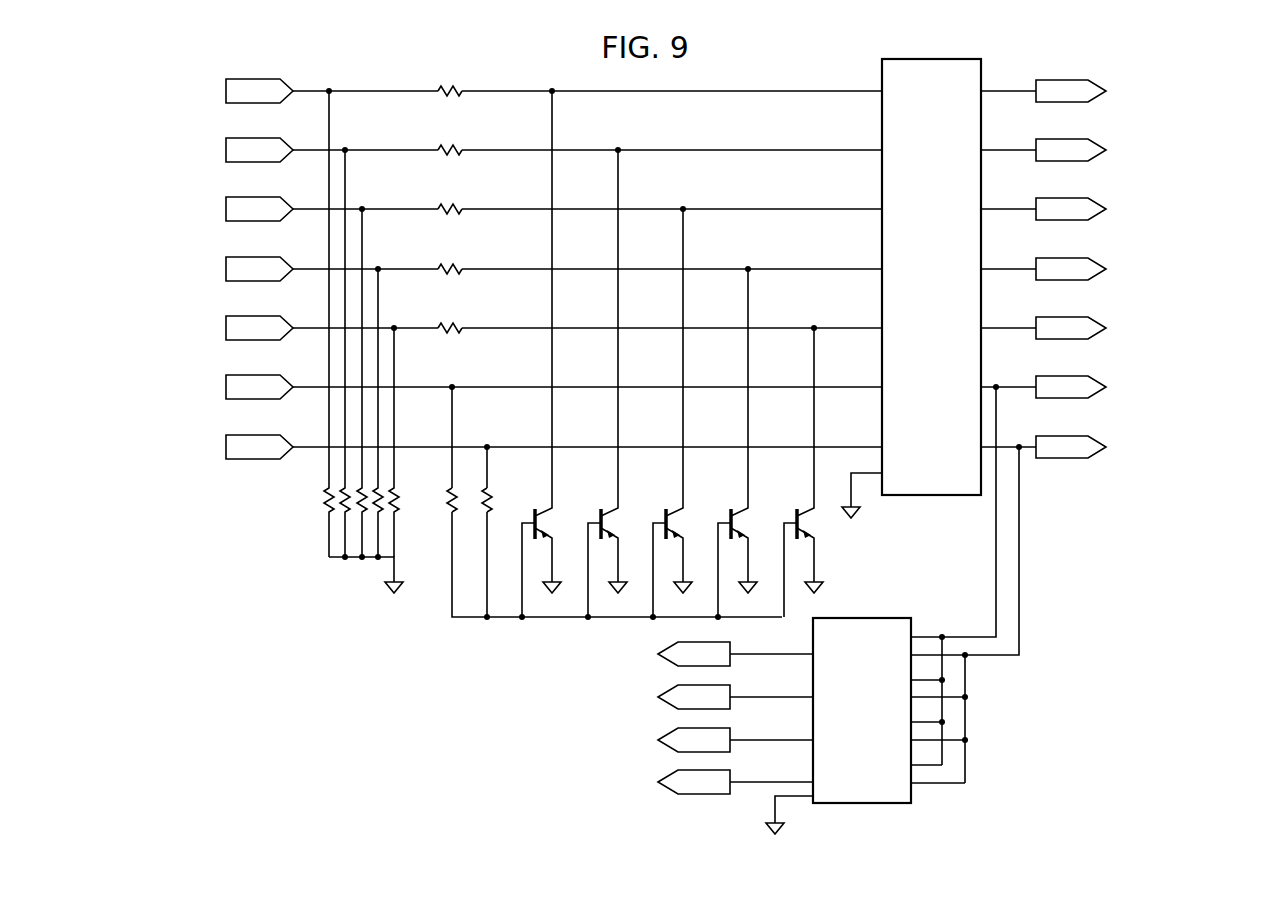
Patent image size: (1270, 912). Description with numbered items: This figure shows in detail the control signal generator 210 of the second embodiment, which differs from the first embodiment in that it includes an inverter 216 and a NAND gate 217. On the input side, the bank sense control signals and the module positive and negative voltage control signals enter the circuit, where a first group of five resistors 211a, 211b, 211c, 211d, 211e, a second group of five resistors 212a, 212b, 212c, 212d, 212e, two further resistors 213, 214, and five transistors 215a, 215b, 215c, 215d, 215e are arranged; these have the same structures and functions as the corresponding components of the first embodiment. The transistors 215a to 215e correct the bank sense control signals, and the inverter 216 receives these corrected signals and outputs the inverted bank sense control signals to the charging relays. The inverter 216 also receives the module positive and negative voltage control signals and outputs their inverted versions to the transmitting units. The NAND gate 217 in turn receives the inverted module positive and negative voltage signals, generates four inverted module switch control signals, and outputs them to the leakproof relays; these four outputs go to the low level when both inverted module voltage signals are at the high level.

The control signal generator 210 is at (308, 702).
The resistor 211a is at (328, 498).
The resistor 211b is at (345, 513).
The resistor 211c is at (362, 513).
The resistor 211d is at (379, 513).
The resistor 211e is at (395, 491).
The resistor 212a is at (450, 84).
The resistor 212b is at (450, 143).
The resistor 212c is at (450, 202).
The resistor 212d is at (450, 262).
The resistor 212e is at (450, 321).
The resistor 213 is at (452, 500).
The resistor 214 is at (488, 503).
The transistor 215a is at (549, 519).
The transistor 215b is at (615, 519).
The transistor 215c is at (680, 519).
The transistor 215d is at (745, 519).
The transistor 215e is at (820, 525).
The inverter 216 is at (942, 59).
The NAND gate 217 is at (888, 618).